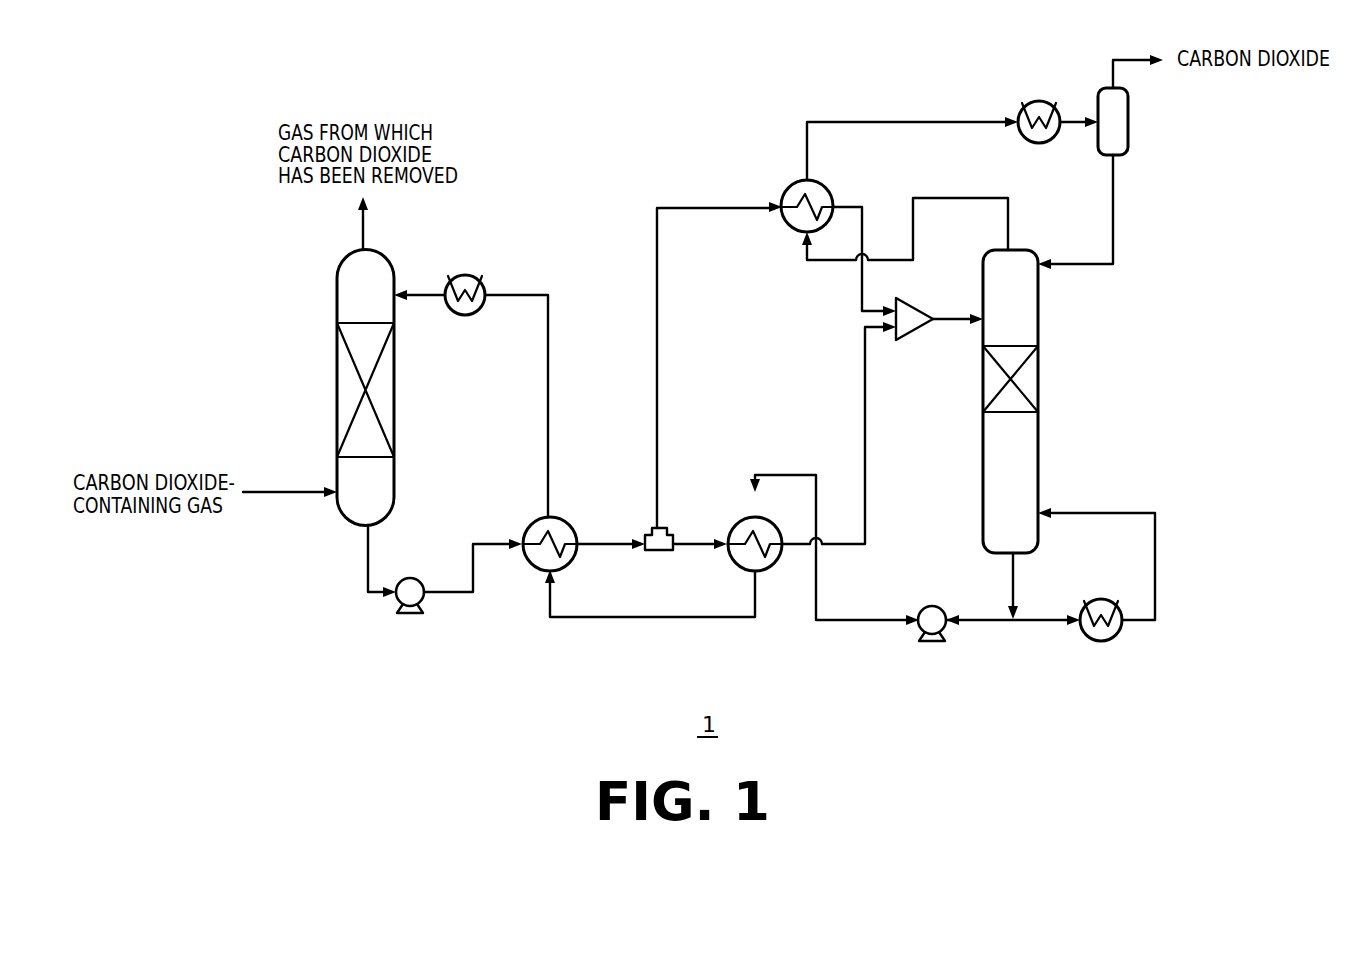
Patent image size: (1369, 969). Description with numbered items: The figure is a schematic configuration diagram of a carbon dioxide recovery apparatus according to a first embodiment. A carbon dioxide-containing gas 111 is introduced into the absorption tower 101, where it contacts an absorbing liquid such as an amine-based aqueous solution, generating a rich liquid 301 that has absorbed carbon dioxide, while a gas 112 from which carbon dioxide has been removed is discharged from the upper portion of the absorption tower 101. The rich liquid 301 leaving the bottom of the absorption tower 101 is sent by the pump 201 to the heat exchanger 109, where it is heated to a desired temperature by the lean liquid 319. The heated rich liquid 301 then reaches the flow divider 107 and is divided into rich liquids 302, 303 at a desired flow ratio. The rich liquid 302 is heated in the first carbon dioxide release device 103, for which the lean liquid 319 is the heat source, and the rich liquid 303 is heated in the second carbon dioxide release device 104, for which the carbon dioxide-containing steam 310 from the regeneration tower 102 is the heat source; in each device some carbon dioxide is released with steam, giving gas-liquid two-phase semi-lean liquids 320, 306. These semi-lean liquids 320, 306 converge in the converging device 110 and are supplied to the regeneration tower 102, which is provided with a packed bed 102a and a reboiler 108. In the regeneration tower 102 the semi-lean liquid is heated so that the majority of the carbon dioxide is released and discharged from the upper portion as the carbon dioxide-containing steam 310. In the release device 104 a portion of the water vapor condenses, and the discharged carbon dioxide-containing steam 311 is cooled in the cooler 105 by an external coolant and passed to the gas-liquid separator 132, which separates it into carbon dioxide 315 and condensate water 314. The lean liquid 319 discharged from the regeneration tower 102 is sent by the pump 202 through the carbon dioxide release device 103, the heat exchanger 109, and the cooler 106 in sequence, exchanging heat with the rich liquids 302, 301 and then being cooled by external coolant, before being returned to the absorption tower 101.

The absorption tower 101 is at (337, 300).
The regeneration tower 102 is at (1058, 401).
The packed bed 102a is at (1040, 378).
The carbon dioxide release device 103 is at (773, 565).
The carbon dioxide release device 104 is at (790, 185).
The cooler 105 is at (1038, 143).
The cooler 106 is at (463, 275).
The flow divider 107 is at (658, 552).
The reboiler 108 is at (1105, 640).
The heat exchanger 109 is at (528, 528).
The converging device 110 is at (915, 333).
The carbon dioxide-containing gas 111 is at (281, 490).
The gas from which carbon dioxide has been removed 112 is at (363, 230).
The gas-liquid separator 132 is at (1128, 121).
The pump 201 is at (410, 578).
The pump 202 is at (925, 606).
The rich liquid 301 is at (368, 571).
The rich liquid 302 is at (682, 541).
The rich liquid 303 is at (659, 352).
The semi-lean liquid 306 is at (861, 288).
The carbon dioxide-containing steam 310 is at (944, 197).
The carbon dioxide-containing steam 311 is at (864, 121).
The condensate water 314 is at (1115, 228).
The carbon dioxide 315 is at (1122, 58).
The lean liquid 319 is at (428, 297).
The semi-lean liquid 320 is at (866, 442).